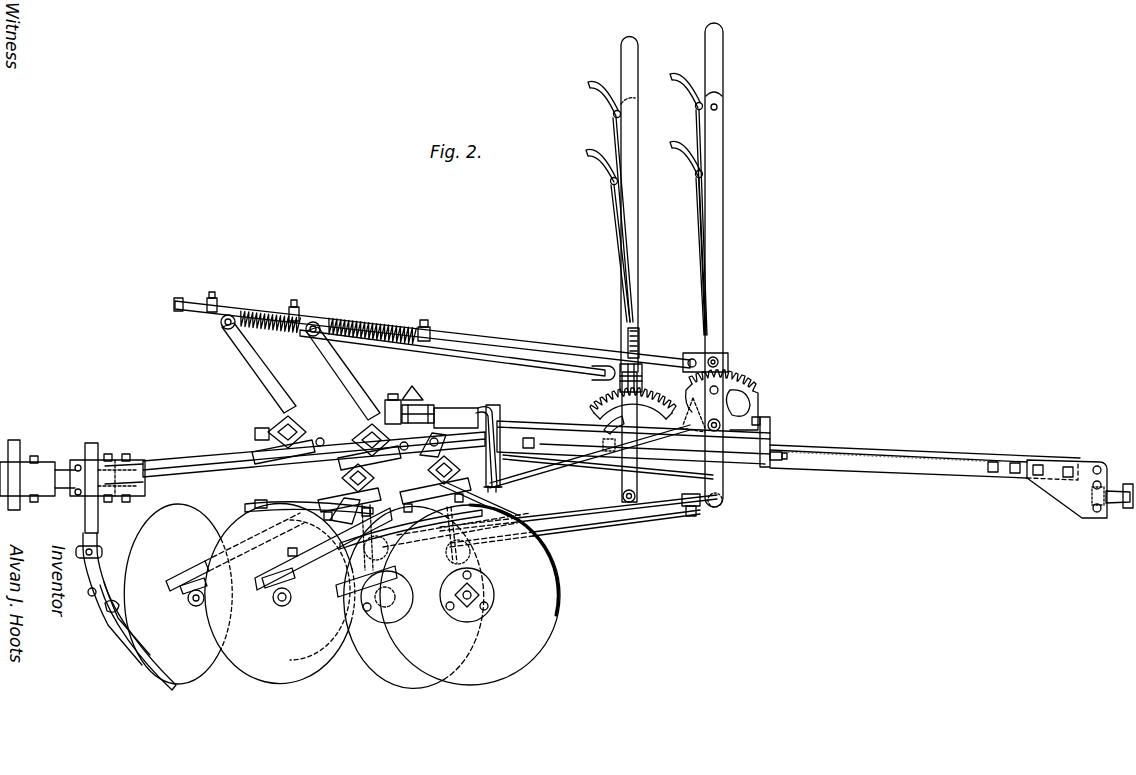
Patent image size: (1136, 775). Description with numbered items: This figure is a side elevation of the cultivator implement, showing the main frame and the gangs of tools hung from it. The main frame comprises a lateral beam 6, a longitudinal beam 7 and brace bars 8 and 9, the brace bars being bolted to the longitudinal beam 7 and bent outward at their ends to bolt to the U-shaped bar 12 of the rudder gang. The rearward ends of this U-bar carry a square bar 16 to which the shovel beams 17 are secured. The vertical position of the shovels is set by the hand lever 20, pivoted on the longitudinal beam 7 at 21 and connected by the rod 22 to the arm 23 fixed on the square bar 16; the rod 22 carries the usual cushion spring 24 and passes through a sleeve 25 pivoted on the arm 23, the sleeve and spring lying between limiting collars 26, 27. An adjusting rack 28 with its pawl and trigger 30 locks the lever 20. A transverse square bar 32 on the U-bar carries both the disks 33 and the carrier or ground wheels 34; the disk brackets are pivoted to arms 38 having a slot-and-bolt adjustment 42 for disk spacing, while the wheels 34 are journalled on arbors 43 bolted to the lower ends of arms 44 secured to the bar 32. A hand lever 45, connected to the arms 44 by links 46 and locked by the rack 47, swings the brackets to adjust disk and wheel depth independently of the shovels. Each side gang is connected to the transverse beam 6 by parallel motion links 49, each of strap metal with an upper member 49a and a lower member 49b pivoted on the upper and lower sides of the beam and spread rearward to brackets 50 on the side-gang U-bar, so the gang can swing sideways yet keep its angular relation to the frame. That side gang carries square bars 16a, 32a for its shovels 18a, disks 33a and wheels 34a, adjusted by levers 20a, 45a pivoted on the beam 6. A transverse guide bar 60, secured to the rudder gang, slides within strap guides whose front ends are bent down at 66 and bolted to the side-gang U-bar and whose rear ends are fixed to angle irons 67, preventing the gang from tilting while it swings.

The lateral beam 6 is at (770, 426).
The longitudinal beam 7 is at (838, 448).
The brace bar 8 is at (865, 462).
The brace bar 9 is at (698, 458).
The U-shaped bar 12 is at (1112, 510).
The square bar 16 is at (268, 428).
The square bar 16a is at (352, 428).
The beam 17 is at (186, 460).
The shovel 18a is at (145, 668).
The hand lever 20 is at (640, 52).
The hand lever 20a is at (723, 158).
The pivot 21 is at (648, 464).
The rod 22 is at (182, 310).
The arm 23 is at (252, 368).
The cushion spring 24 is at (275, 332).
The sleeve 25 is at (232, 315).
The limiting collar 26 is at (208, 302).
The limiting collar 27 is at (428, 328).
The adjusting rack 28 is at (640, 396).
The trigger 30 is at (600, 104).
The transverse square bar 32 is at (340, 476).
The square bar 32a is at (428, 468).
The disk 33 is at (228, 680).
The disk 33a is at (306, 680).
The carrier or ground wheel 34 is at (387, 686).
The wheel 34a is at (520, 660).
The arm 38 is at (272, 507).
The slot-and-bolt adjustment 42 is at (308, 498).
The arbor 43 is at (480, 592).
The arm 44 is at (455, 582).
The hand lever 45 is at (640, 490).
The hand lever 45a is at (723, 490).
The link 46 is at (531, 512).
The rack 47 is at (700, 402).
The parallel motion link 49 is at (532, 420).
The upper member 49a is at (574, 432).
The lower member 49b is at (588, 462).
The bracket 50 is at (502, 466).
The bar 60 is at (435, 406).
The bent-down front end 66 is at (498, 410).
The bracket or angle iron 67 is at (392, 400).